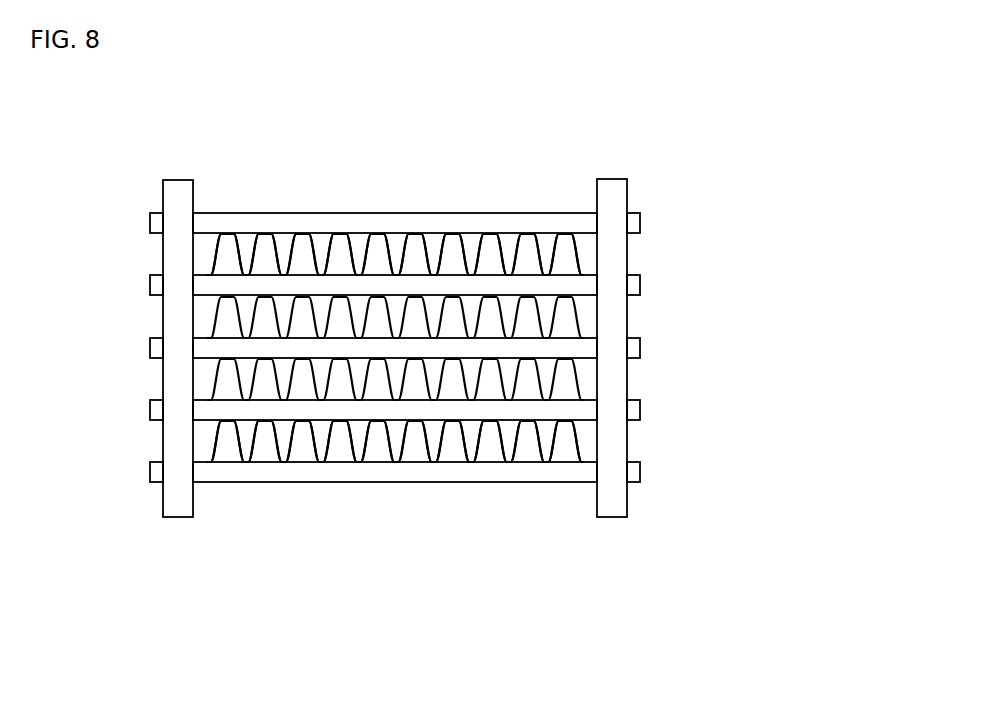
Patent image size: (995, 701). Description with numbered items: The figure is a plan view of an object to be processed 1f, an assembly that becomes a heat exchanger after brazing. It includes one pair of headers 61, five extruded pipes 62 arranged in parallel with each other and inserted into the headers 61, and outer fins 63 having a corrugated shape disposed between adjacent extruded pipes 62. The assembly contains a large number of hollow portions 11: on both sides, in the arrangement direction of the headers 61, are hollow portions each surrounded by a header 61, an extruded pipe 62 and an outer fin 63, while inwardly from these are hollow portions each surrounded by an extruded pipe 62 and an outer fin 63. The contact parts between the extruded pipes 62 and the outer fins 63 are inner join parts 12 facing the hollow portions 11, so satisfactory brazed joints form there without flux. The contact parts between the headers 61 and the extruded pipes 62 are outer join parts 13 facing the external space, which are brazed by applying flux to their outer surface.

The object to be processed 1f is at (623, 115).
The hollow portions 11 is at (575, 248).
The inner join parts 12 is at (197, 458).
The outer join parts 13 is at (628, 402).
The header 61 is at (181, 190).
The extruded pipe 62 is at (373, 215).
The outer fin 63 is at (502, 247).